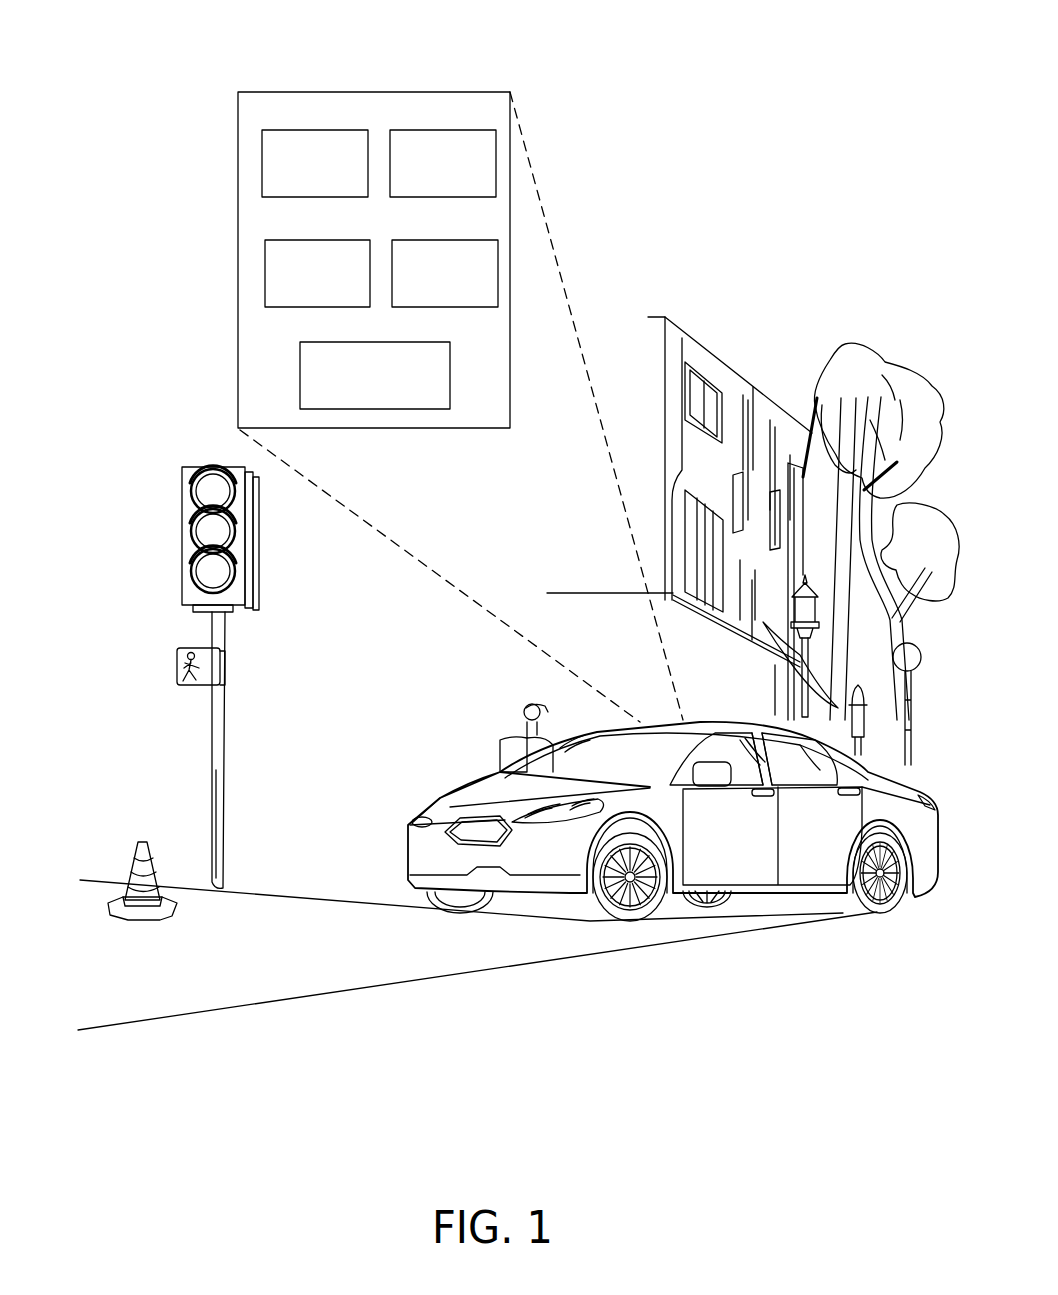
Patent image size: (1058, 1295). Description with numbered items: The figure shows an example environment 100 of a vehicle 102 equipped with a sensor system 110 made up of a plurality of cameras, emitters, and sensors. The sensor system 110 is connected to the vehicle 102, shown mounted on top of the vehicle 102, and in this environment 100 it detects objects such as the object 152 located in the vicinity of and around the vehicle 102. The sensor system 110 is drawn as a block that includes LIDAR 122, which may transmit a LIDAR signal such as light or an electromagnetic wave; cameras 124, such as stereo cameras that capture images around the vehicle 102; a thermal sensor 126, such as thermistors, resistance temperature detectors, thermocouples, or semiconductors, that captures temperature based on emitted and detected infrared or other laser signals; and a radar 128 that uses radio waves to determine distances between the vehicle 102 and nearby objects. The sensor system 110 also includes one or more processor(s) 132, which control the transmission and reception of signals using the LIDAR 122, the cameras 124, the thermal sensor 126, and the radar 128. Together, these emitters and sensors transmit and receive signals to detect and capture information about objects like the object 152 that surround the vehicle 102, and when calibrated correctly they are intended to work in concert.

The environment 100 is at (855, 30).
The vehicle 102 is at (440, 798).
The sensor system 110 is at (462, 92).
The LIDAR 122 is at (447, 130).
The cameras 124 is at (297, 130).
The thermal sensor 126 is at (312, 240).
The radar 128 is at (449, 240).
The processor(s) 132 is at (388, 342).
The object 152 is at (132, 918).